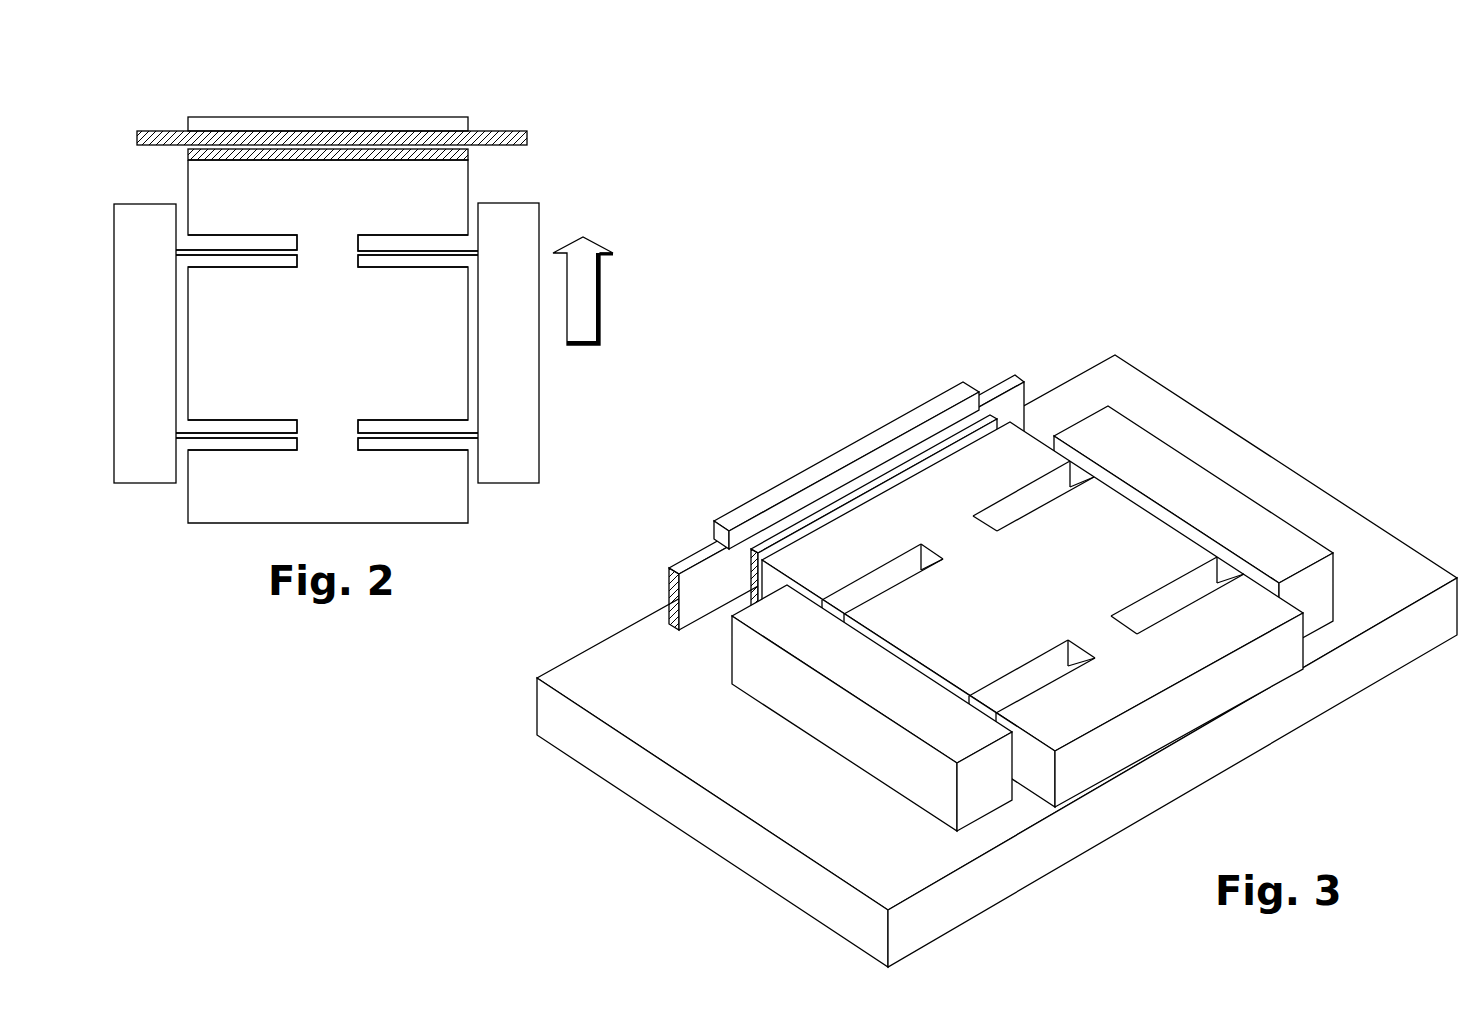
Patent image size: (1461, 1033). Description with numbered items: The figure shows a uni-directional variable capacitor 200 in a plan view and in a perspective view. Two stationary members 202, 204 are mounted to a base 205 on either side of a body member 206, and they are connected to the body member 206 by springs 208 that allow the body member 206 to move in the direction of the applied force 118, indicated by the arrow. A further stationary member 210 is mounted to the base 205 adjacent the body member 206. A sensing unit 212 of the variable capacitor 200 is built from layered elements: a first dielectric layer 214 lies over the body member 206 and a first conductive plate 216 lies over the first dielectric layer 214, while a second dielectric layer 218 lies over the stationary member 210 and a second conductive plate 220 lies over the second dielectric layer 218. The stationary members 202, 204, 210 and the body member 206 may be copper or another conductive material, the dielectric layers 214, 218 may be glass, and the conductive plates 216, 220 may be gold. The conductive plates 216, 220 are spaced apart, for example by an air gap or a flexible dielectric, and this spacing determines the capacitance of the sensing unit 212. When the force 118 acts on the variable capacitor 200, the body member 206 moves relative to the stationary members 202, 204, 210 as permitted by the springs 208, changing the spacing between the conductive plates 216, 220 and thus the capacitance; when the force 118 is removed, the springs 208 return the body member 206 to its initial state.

In FIG. 2, the applied force 118 is at (583, 322).
In FIG. 2, the uni-directional variable capacitor 200 is at (180, 93).
In FIG. 3, the uni-directional variable capacitor 200 is at (593, 598).
In FIG. 2, the stationary member 202 is at (152, 468).
In FIG. 3, the stationary member 202 is at (786, 697).
In FIG. 2, the stationary member 204 is at (492, 202).
In FIG. 3, the stationary member 204 is at (1268, 540).
In FIG. 3, the base 205 is at (1128, 378).
In FIG. 2, the body member 206 is at (363, 338).
In FIG. 3, the body member 206 is at (1032, 554).
In FIG. 2, the springs 208 is at (448, 248).
In FIG. 3, the springs 208 is at (985, 460).
In FIG. 2, the stationary member 210 is at (360, 120).
In FIG. 3, the stationary member 210 is at (922, 410).
In FIG. 2, the sensing unit 212 is at (303, 98).
In FIG. 3, the sensing unit 212 is at (775, 450).
In FIG. 2, the first dielectric layer 214 is at (440, 158).
In FIG. 3, the first dielectric layer 214 is at (862, 505).
In FIG. 2, the first conductive plate 216 is at (232, 158).
In FIG. 3, the first conductive plate 216 is at (745, 552).
In FIG. 2, the second dielectric layer 218 is at (480, 132).
In FIG. 3, the second dielectric layer 218 is at (773, 540).
In FIG. 2, the second conductive plate 220 is at (520, 137).
In FIG. 3, the second conductive plate 220 is at (712, 600).